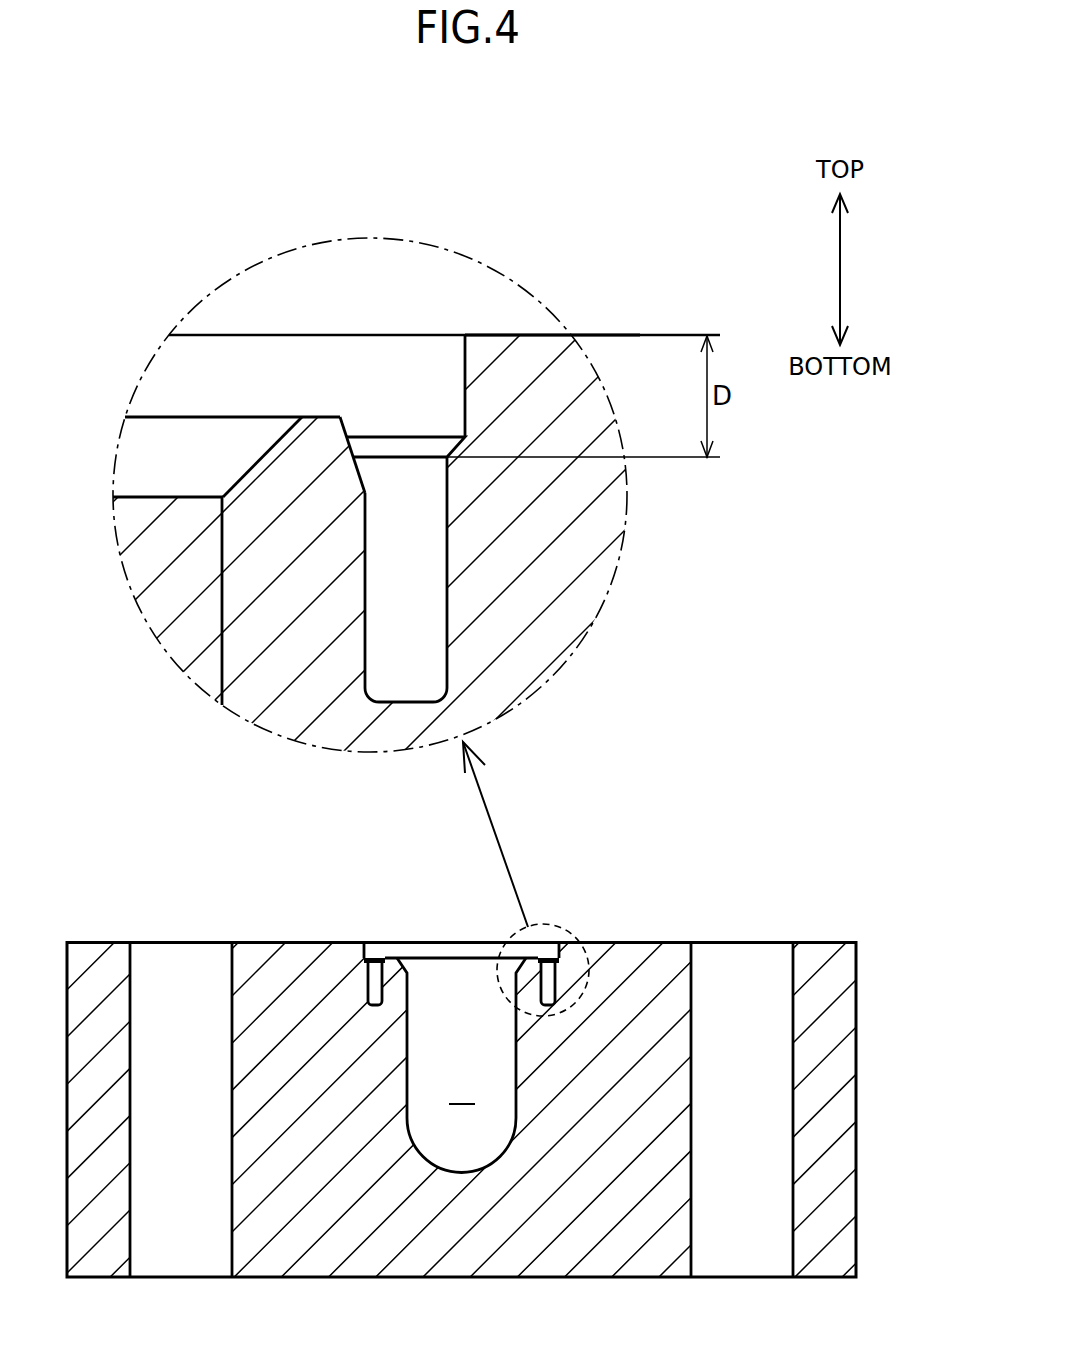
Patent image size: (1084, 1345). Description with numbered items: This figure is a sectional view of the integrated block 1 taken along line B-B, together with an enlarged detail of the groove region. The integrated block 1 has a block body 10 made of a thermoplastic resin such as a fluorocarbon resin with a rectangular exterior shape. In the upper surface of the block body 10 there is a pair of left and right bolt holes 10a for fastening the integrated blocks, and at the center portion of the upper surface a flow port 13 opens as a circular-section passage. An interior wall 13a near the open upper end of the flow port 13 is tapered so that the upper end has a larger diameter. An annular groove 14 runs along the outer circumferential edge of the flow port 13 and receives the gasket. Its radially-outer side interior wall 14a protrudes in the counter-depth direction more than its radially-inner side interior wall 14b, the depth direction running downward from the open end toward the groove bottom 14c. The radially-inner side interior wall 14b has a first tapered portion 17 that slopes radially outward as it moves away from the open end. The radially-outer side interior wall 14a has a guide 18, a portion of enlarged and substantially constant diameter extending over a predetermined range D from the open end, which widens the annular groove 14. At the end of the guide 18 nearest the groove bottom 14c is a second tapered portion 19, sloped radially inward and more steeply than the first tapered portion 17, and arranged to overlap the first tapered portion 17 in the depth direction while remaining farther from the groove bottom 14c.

The integrated block 1 is at (542, 672).
The block body 10 is at (858, 1088).
The bolt holes 10a is at (130, 968).
The flow port 13 is at (222, 557).
The interior wall 13a is at (254, 466).
The annular groove 14 is at (558, 950).
The radially-outer side interior wall 14a is at (447, 540).
The radially-inner side interior wall 14b is at (365, 597).
The groove bottom 14c is at (408, 702).
The first tapered portion 17 is at (346, 430).
The guide 18 is at (465, 372).
The second tapered portion 19 is at (450, 440).